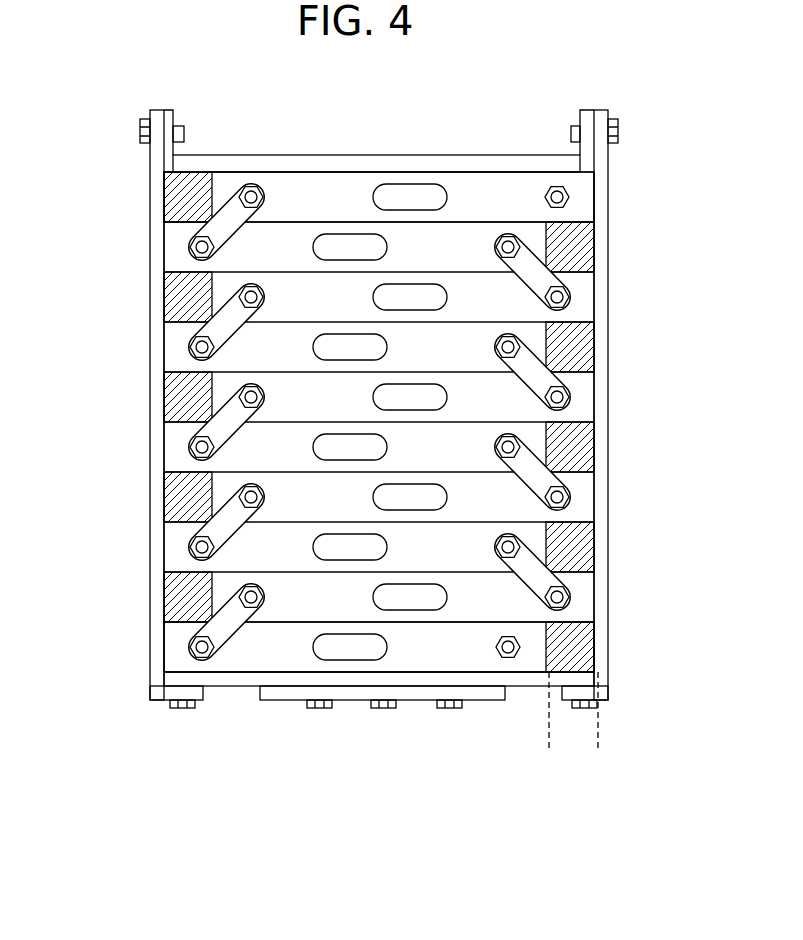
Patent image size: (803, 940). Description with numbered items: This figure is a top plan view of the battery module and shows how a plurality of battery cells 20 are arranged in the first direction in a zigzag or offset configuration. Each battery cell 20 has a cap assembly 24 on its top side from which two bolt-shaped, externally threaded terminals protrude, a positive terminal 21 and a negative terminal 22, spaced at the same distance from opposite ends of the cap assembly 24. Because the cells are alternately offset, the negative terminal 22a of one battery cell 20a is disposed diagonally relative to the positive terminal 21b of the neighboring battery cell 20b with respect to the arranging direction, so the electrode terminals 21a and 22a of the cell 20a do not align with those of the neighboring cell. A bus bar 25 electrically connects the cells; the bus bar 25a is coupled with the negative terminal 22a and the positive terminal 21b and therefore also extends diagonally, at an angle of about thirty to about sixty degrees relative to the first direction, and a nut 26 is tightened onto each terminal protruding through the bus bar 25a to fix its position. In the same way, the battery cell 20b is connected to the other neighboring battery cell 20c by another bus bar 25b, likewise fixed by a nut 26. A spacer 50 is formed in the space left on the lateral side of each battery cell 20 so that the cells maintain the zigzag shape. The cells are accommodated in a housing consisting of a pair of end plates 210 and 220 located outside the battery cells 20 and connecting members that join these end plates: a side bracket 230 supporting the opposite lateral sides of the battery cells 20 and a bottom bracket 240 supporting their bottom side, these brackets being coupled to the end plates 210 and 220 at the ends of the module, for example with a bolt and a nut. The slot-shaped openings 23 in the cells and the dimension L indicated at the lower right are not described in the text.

The battery cell 20 is at (608, 183).
The battery cell 20a is at (413, 653).
The neighboring battery cell 20b is at (577, 595).
The other battery cell 20c is at (520, 535).
The positive terminal 21 is at (251, 185).
The electrode terminal 21a is at (512, 658).
The positive terminal 21b is at (240, 586).
The negative terminal 22 is at (553, 185).
The negative terminal 22a is at (192, 643).
The slot hole 23 is at (417, 186).
The cap assembly 24 is at (228, 186).
The bus bar 25 is at (228, 223).
The bus bar 25a is at (220, 630).
The bus bar 25b is at (532, 567).
The nut 26 is at (235, 213).
The spacer 50 is at (580, 345).
The end plate 210 is at (225, 708).
The end plate 220 is at (343, 148).
The side bracket 230 is at (138, 520).
The bottom bracket 240 is at (283, 708).
The length L is at (551, 739).